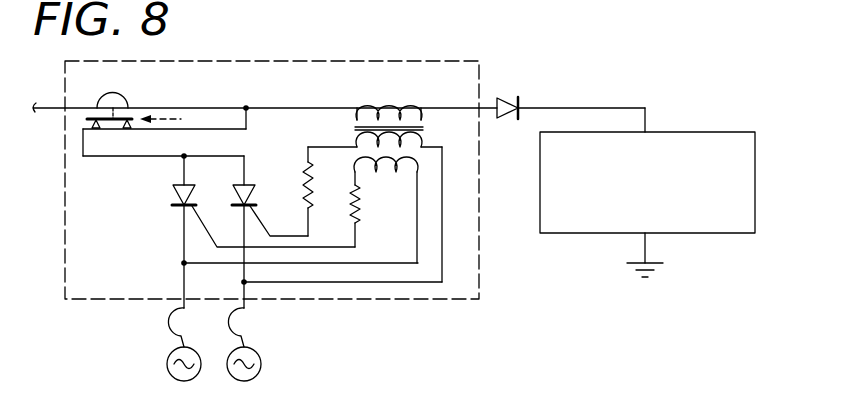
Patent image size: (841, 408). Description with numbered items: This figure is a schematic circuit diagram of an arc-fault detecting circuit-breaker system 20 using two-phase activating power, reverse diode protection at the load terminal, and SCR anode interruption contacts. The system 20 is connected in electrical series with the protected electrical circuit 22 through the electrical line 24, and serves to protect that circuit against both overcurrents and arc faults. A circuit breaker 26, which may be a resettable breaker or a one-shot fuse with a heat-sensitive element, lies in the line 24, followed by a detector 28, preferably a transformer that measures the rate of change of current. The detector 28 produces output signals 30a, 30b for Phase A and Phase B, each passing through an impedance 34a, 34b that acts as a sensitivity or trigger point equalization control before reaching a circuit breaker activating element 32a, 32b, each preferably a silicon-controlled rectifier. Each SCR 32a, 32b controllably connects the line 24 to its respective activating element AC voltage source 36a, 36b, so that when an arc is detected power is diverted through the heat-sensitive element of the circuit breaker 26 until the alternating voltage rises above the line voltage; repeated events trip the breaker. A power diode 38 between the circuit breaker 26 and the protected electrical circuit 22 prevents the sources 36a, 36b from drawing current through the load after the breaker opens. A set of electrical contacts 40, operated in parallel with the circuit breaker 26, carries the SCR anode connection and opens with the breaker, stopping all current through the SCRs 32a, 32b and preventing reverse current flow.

The arc-fault detecting circuit-breaker system 20 is at (491, 58).
The protected electrical circuit 22 is at (647, 186).
The electrical line 24 is at (605, 107).
The circuit breaker 26 is at (119, 94).
The detector 28 is at (411, 99).
The output signal 30a is at (357, 235).
The output signal 30b is at (308, 161).
The circuit breaker activating element 32a is at (172, 192).
The circuit breaker activating element 32b is at (233, 187).
The impedance 34a is at (358, 193).
The impedance 34b is at (303, 187).
The activating element AC voltage source 36a is at (167, 364).
The activating element AC voltage source 36b is at (261, 364).
The power diode 38 is at (510, 97).
The set of electrical contacts 40 is at (173, 119).